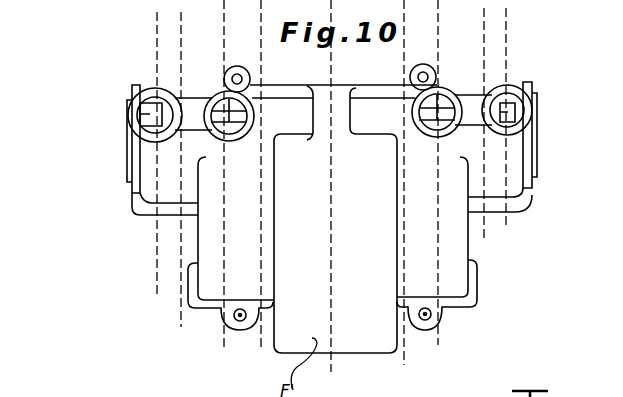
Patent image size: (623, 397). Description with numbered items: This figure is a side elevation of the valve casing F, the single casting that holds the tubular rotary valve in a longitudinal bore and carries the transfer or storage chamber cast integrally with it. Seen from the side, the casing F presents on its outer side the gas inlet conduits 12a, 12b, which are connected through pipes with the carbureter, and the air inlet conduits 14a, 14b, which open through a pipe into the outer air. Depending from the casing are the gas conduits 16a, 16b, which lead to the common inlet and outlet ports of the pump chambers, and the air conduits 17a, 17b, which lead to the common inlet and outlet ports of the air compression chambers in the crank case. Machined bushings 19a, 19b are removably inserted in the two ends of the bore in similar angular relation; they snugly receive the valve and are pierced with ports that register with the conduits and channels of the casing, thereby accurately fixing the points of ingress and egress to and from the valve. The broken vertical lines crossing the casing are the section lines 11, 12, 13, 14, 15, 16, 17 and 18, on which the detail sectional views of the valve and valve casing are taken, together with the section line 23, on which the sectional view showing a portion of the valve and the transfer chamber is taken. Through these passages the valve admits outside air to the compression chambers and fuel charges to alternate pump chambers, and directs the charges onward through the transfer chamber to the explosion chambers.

The section line 11 is at (521, 247).
The section line 12 is at (496, 262).
The section line 13 is at (451, 367).
The section line 14 is at (413, 387).
The section line 15 is at (162, 316).
The section line 16 is at (190, 347).
The section line 17 is at (232, 373).
The section line 18 is at (272, 373).
The section line 23 is at (335, 197).
The gas inlet conduit 12a is at (515, 112).
The gas inlet conduit 12b is at (112, 82).
The air inlet conduit 14a is at (452, 88).
The air inlet conduit 14b is at (222, 107).
The machined bushing 19a is at (570, 153).
The machined bushing 19b is at (107, 198).
The depending gas conduit 16a is at (498, 183).
The depending gas conduit 16b is at (55, 245).
The depending air conduit 17a is at (453, 267).
The depending air conduit 17b is at (115, 266).
The valve casing F is at (377, 112).